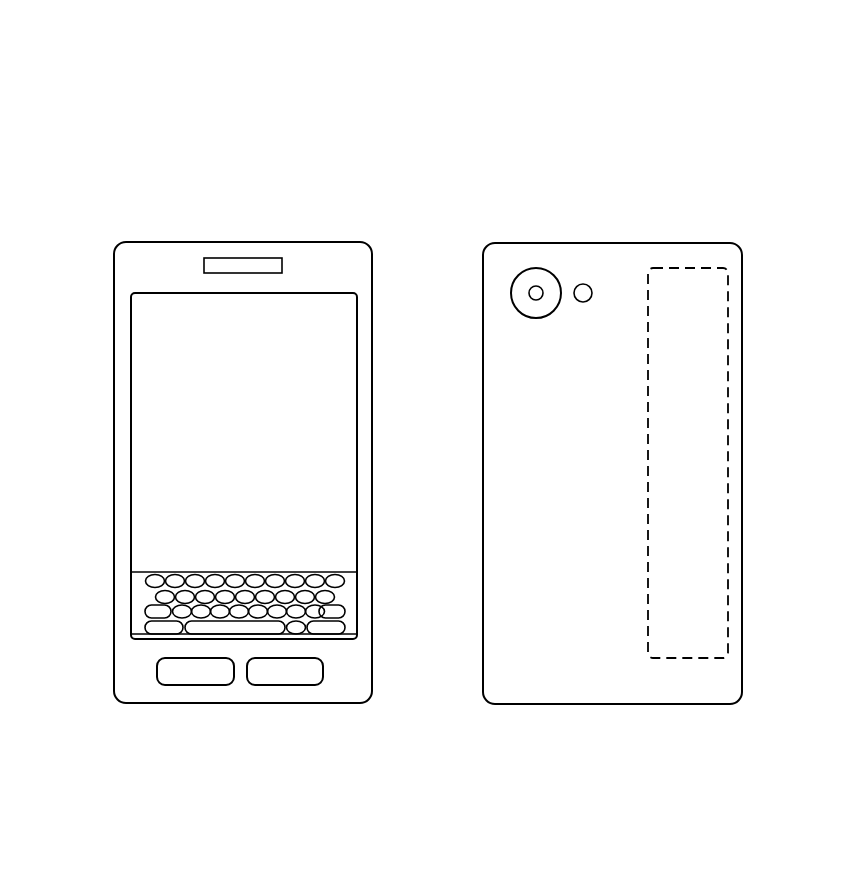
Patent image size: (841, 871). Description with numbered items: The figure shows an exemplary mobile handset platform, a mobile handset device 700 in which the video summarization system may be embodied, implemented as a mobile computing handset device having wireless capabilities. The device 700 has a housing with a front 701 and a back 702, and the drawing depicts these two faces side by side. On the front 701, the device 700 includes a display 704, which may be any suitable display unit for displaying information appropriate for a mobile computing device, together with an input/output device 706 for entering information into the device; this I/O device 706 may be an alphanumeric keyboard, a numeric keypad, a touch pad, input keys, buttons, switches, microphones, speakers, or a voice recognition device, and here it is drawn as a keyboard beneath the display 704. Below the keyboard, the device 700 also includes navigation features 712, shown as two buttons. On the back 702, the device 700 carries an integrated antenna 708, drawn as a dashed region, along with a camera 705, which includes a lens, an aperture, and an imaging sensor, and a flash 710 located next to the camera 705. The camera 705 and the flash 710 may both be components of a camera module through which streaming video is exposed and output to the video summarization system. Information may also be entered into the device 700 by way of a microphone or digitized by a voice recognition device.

The mobile handset device 700 is at (120, 98).
The front 701 is at (222, 237).
The back 702 is at (537, 237).
The display 704 is at (262, 477).
The camera 705 is at (522, 305).
The input/output (I/O) device 706 is at (137, 602).
The integrated antenna 708 is at (707, 477).
The flash 710 is at (593, 285).
The navigation features 712 is at (172, 677).